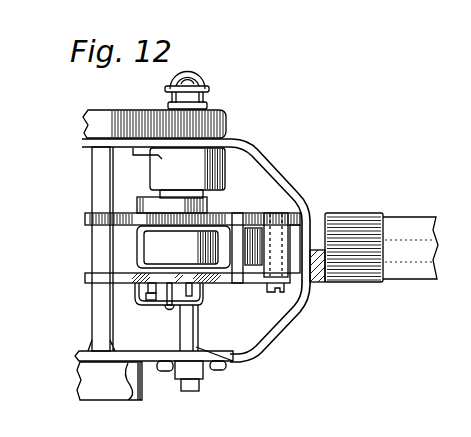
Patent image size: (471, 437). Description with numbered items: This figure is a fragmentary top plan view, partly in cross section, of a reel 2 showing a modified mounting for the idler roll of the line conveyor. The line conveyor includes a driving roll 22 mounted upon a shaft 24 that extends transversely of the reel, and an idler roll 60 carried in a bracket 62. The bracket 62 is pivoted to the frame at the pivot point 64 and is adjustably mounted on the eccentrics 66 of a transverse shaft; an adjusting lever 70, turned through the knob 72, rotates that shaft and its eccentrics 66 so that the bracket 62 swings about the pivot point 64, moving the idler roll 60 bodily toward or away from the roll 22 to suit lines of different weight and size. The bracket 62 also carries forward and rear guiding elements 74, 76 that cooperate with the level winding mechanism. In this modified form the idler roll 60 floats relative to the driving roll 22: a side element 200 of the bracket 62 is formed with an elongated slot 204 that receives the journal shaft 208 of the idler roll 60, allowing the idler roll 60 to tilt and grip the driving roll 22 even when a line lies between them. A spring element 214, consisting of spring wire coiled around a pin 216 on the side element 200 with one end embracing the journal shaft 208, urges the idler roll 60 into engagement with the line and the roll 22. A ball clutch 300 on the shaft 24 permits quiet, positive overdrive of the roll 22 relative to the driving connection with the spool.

The reel 2 is at (303, 308).
The roll 22 is at (264, 266).
The shaft 24 is at (196, 347).
The idler roll 60 is at (181, 247).
The bracket 62 is at (238, 211).
The pivot point 64 is at (275, 293).
The eccentrics 66 is at (98, 246).
The adjusting lever 70 is at (143, 373).
The knob 72 is at (118, 398).
The forward guiding element 74 is at (262, 216).
The rear guiding element 76 is at (138, 253).
The side element 200 is at (459, 328).
The elongated slot 204 is at (454, 413).
The journal shaft 208 is at (204, 302).
The spring element 214 is at (155, 303).
The pin 216 is at (137, 293).
The ball clutch 300 is at (242, 150).